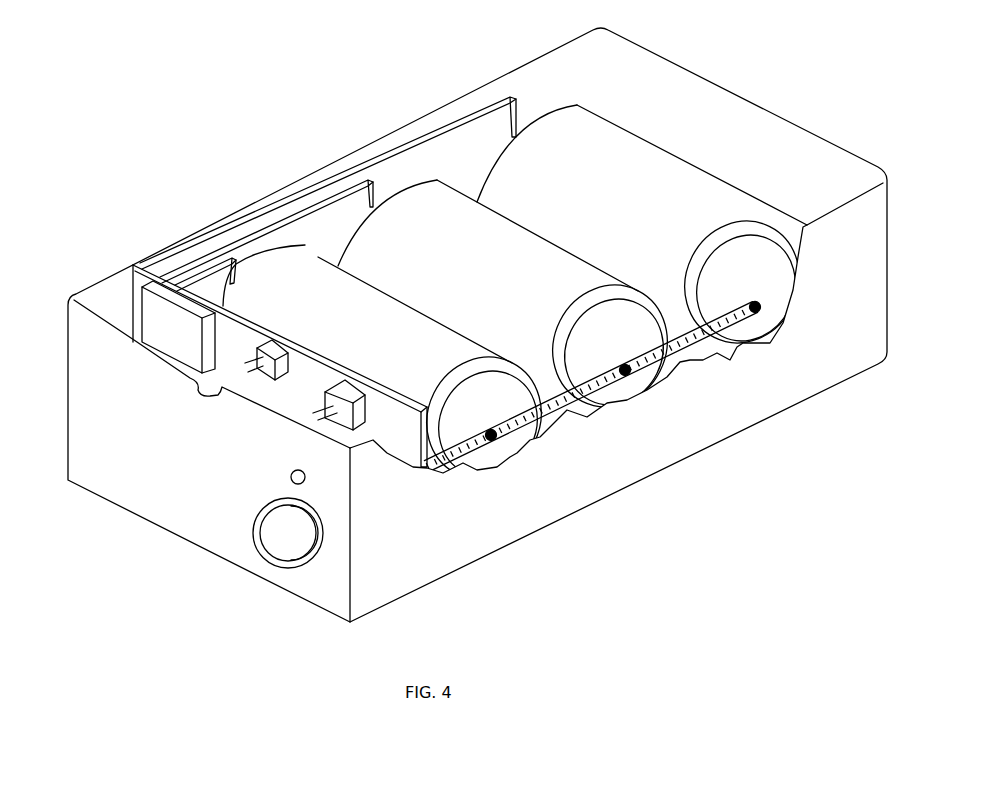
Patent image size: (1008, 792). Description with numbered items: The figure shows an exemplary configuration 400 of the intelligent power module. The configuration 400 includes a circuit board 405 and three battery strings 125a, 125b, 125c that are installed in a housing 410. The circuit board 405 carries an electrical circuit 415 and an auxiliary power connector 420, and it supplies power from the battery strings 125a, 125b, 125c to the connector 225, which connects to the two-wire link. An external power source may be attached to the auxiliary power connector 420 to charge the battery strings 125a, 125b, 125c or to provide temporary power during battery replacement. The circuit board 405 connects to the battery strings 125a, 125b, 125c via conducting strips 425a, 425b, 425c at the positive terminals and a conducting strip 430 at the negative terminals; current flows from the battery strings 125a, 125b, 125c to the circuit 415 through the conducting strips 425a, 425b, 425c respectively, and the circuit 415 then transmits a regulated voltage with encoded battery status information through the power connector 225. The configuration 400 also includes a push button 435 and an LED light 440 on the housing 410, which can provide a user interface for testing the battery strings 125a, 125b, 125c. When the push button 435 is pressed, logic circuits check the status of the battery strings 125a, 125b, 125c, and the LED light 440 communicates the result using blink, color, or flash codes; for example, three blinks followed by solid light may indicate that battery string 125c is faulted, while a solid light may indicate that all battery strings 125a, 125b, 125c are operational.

The configuration 400 is at (95, 212).
The circuit board 405 is at (280, 366).
The housing 410 is at (477, 325).
The electrical circuit 415 is at (167, 345).
The auxiliary power connector 420 is at (362, 392).
The connector 225 is at (284, 342).
The conducting strip 425a is at (500, 98).
The conducting strip 425b is at (355, 185).
The conducting strip 425c is at (190, 267).
The battery string 125a is at (648, 234).
The battery string 125b is at (513, 303).
The battery string 125c is at (392, 372).
The conducting strip 430 is at (593, 397).
The push button 435 is at (288, 533).
The LED light 440 is at (290, 477).